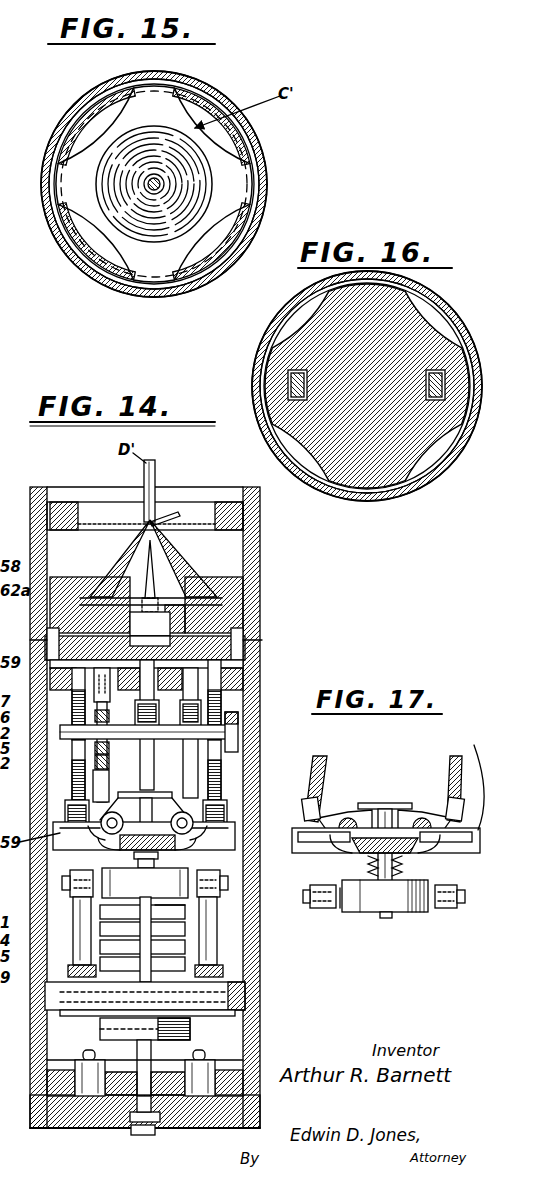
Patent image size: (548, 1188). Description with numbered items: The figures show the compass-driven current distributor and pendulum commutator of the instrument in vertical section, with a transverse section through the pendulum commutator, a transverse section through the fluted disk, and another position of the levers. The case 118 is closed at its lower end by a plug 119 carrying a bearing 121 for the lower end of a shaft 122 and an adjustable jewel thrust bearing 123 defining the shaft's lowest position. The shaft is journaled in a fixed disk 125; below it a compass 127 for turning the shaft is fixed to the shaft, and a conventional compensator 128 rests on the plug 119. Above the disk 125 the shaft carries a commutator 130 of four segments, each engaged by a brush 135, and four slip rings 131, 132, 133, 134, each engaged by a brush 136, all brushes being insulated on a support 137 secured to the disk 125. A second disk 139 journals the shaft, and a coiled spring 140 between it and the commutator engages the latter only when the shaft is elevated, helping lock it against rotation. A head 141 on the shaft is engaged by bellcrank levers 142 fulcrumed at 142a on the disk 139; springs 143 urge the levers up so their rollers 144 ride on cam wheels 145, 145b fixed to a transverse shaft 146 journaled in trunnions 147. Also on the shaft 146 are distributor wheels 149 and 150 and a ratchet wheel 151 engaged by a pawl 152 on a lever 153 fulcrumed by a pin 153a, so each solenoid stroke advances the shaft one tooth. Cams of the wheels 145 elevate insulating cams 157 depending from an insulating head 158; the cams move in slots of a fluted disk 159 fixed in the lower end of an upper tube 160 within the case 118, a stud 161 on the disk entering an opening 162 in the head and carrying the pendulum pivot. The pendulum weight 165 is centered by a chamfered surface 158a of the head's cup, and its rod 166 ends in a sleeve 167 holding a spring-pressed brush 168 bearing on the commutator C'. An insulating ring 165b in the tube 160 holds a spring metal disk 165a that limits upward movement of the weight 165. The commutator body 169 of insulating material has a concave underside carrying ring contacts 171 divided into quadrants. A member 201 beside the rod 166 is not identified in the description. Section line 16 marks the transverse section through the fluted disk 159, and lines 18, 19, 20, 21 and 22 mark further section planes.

In FIG. 15, the case 118 is at (92, 80).
In FIG. 16, the case 118 is at (322, 285).
In FIG. 14, the case 118 is at (261, 563).
In FIG. 14, the plug 119 is at (66, 1118).
In FIG. 14, the bearing 121 is at (130, 1114).
In FIG. 14, the shaft 122 is at (137, 1052).
In FIG. 17, the shaft 122 is at (392, 916).
In FIG. 14, the jewel thrust bearing 123 is at (156, 1132).
In FIG. 14, the disk 125 is at (245, 990).
In FIG. 14, the compass 127 is at (190, 1030).
In FIG. 14, the compensator 128 is at (47, 1063).
In FIG. 14, the commutator 130 is at (156, 891).
In FIG. 14, the slip ring 131 is at (150, 915).
In FIG. 14, the slip ring 132 is at (150, 932).
In FIG. 14, the slip ring 133 is at (150, 950).
In FIG. 14, the slip ring 134 is at (150, 967).
In FIG. 14, the brush 135 is at (145, 883).
In FIG. 17, the brush 135 is at (322, 908).
In FIG. 14, the brush 136 is at (216, 968).
In FIG. 14, the support 137 is at (214, 972).
In FIG. 17, the support 137 is at (341, 898).
In FIG. 17, the second disk 139 is at (476, 752).
In FIG. 14, the coiled spring 140 is at (158, 860).
In FIG. 14, the head 141 is at (160, 792).
In FIG. 17, the head 141 is at (390, 803).
In FIG. 14, the bellcrank levers 142 is at (95, 840).
In FIG. 17, the bellcrank levers 142 is at (346, 812).
In FIG. 14, the fulcrum 142a is at (110, 846).
In FIG. 17, the fulcrum 142a is at (334, 842).
In FIG. 14, the springs 143 is at (195, 842).
In FIG. 17, the springs 143 is at (448, 760).
In FIG. 14, the rollers 144 is at (72, 815).
In FIG. 17, the rollers 144 is at (325, 800).
In FIG. 14, the cam wheels 145 is at (222, 772).
In FIG. 17, the rod 145b is at (322, 760).
In FIG. 14, the transverse shaft 146 is at (202, 734).
In FIG. 14, the trunnions 147 is at (238, 740).
In FIG. 14, the distributor wheel 149 is at (143, 745).
In FIG. 14, the distributor wheel 150 is at (107, 750).
In FIG. 17, the distributor wheel 150 is at (420, 906).
In FIG. 14, the ratchet wheel 151 is at (150, 764).
In FIG. 14, the pawl 152 is at (146, 720).
In FIG. 14, the lever 153 is at (163, 702).
In FIG. 14, the pin 153a is at (212, 688).
In FIG. 16, the cams 157 is at (438, 372).
In FIG. 14, the cams 157 is at (244, 632).
In FIG. 14, the head 158 is at (240, 590).
In FIG. 14, the chamfered surface 158a is at (90, 555).
In FIG. 16, the fluted disk 159 is at (408, 322).
In FIG. 14, the fluted disk 159 is at (250, 660).
In FIG. 15, the upper tube 160 is at (90, 98).
In FIG. 16, the upper tube 160 is at (305, 303).
In FIG. 14, the upper tube 160 is at (250, 542).
In FIG. 14, the stud 161 is at (150, 624).
In FIG. 14, the opening 162 is at (160, 606).
In FIG. 14, the weight 165 is at (160, 567).
In FIG. 14, the spring metal disk 165a is at (115, 524).
In FIG. 14, the ring 165b is at (92, 478).
In FIG. 14, the rod 166 is at (156, 479).
In FIG. 15, the sleeve 167 is at (159, 190).
In FIG. 15, the brush 168 is at (163, 185).
In FIG. 15, the body 169 is at (172, 112).
In FIG. 15, the ring contacts 171 is at (185, 170).
In FIG. 14, the arm 201 is at (160, 516).
In FIG. 14, the section line 16— 16 is at (277, 652).
In FIG. 14, the section line 18— 18 is at (200, 700).
In FIG. 14, the section line 19— 19 is at (275, 846).
In FIG. 14, the section line 20— 20 is at (275, 914).
In FIG. 14, the section line 21— 21 is at (275, 905).
In FIG. 14, the section line 22— 22 is at (272, 1015).